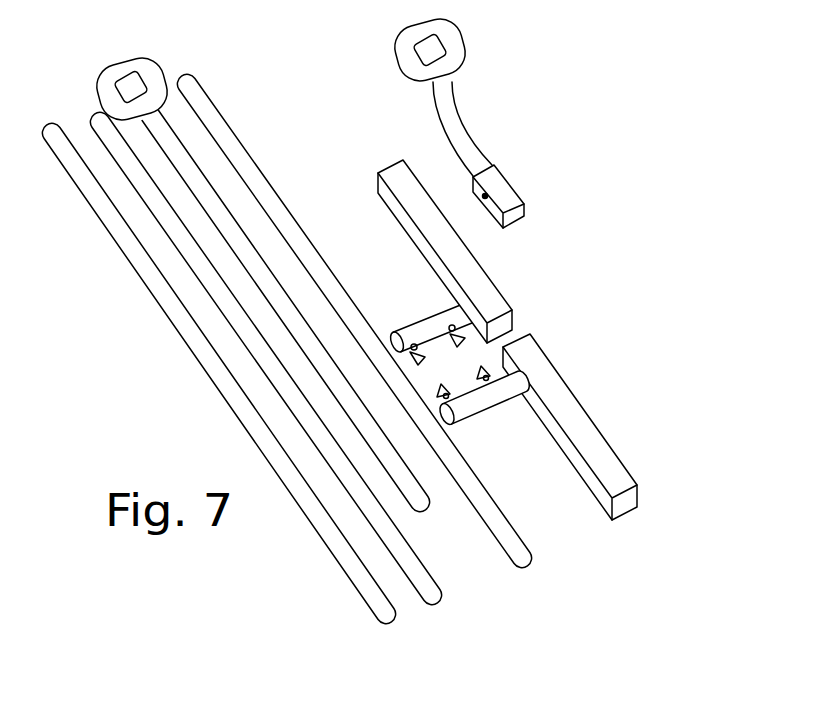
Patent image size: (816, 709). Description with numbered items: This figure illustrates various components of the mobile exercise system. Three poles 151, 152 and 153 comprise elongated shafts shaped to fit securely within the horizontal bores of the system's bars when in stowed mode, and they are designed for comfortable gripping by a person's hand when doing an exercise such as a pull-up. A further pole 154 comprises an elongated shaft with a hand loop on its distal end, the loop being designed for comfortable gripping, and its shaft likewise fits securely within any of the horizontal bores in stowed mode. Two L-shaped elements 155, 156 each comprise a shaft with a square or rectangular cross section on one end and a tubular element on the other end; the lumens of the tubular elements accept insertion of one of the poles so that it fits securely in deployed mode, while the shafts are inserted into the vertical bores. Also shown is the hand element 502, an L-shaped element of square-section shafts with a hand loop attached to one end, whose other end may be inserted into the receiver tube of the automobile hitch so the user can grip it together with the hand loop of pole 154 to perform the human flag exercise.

The pole 151 is at (396, 623).
The pole 152 is at (440, 603).
The pole 153 is at (532, 564).
The pole 154 is at (428, 509).
The L-shaped element 155 is at (593, 422).
The L-shaped element 156 is at (473, 253).
The hand element 502 is at (460, 118).